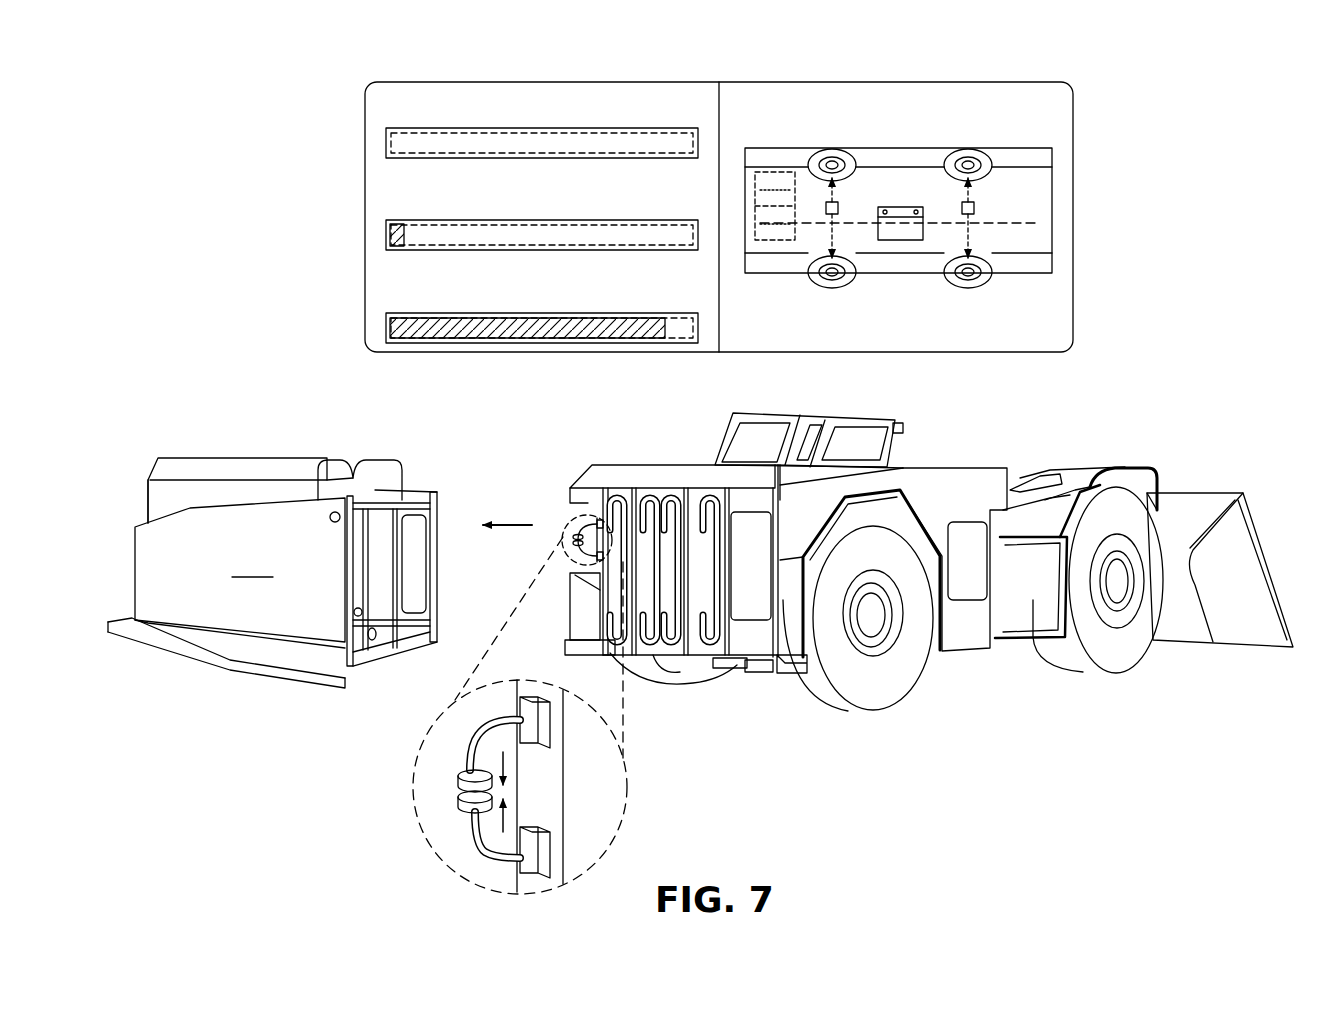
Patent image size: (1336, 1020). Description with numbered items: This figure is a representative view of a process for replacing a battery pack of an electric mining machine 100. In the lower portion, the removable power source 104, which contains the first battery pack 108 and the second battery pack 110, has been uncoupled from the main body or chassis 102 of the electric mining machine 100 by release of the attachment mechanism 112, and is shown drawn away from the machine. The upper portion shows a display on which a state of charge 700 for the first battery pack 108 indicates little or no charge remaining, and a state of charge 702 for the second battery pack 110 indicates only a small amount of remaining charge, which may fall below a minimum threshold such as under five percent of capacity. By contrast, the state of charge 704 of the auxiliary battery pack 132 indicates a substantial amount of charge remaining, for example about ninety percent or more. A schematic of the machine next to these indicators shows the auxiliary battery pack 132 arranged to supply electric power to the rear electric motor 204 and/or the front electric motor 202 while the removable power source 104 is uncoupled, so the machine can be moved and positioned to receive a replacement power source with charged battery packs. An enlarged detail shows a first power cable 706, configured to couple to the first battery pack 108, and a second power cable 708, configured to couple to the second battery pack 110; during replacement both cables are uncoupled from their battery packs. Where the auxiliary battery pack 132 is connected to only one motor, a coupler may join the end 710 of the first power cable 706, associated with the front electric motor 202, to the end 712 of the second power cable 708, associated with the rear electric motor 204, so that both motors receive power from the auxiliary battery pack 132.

The electric mining machine 100 is at (987, 110).
The chassis 102 is at (971, 485).
The removable power source 104 is at (272, 584).
The first battery pack 108 is at (435, 103).
The second battery pack 110 is at (435, 190).
The attachment mechanism 112 is at (618, 488).
The auxiliary battery pack 132 is at (363, 292).
The front electric motor 202 is at (976, 208).
The rear electric motor 204 is at (841, 206).
The state of charge 700 is at (395, 137).
The state of charge 702 is at (393, 233).
The state of charge 704 is at (395, 330).
The first power cable 706 is at (478, 740).
The second power cable 708 is at (478, 845).
The end 710 is at (458, 790).
The end 712 is at (460, 805).